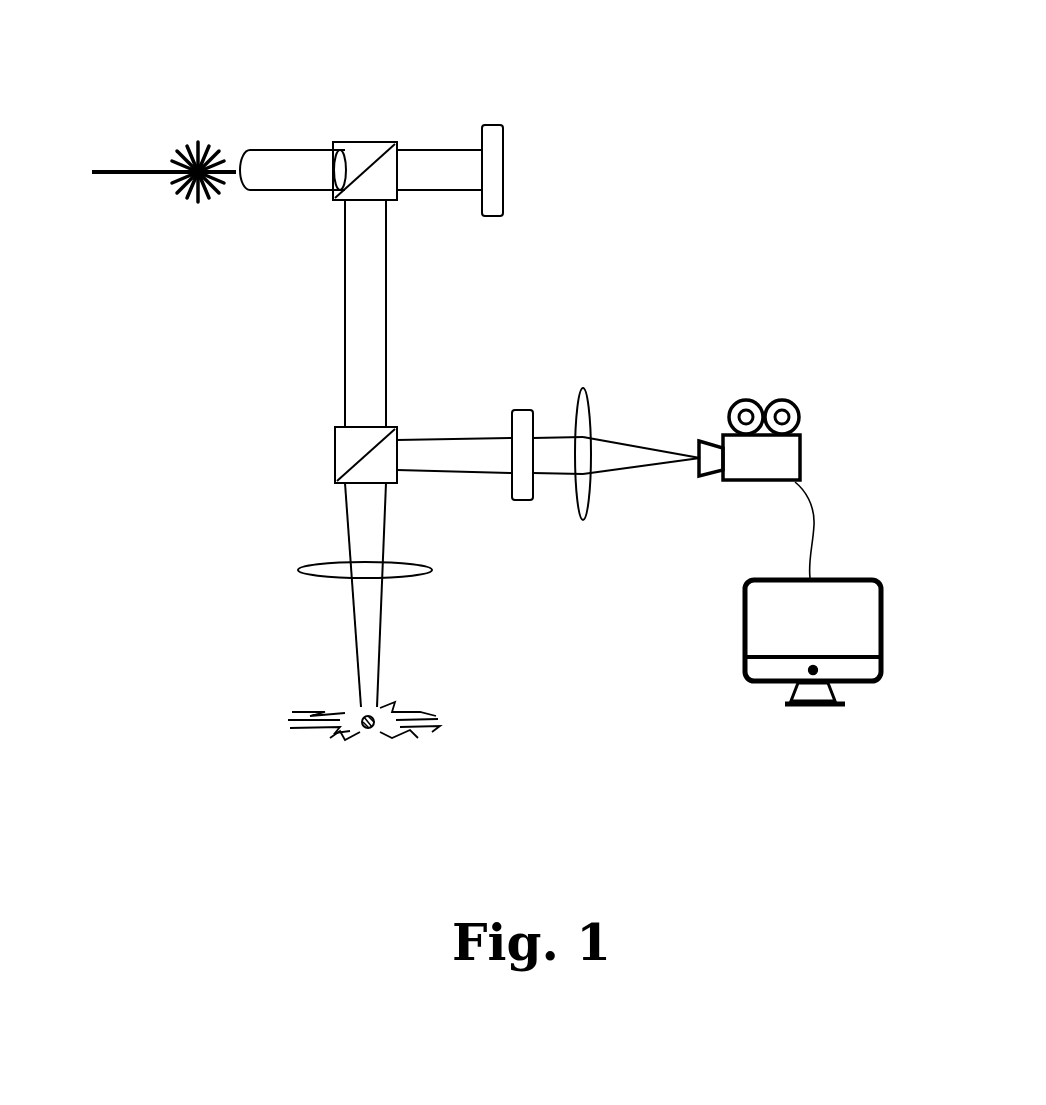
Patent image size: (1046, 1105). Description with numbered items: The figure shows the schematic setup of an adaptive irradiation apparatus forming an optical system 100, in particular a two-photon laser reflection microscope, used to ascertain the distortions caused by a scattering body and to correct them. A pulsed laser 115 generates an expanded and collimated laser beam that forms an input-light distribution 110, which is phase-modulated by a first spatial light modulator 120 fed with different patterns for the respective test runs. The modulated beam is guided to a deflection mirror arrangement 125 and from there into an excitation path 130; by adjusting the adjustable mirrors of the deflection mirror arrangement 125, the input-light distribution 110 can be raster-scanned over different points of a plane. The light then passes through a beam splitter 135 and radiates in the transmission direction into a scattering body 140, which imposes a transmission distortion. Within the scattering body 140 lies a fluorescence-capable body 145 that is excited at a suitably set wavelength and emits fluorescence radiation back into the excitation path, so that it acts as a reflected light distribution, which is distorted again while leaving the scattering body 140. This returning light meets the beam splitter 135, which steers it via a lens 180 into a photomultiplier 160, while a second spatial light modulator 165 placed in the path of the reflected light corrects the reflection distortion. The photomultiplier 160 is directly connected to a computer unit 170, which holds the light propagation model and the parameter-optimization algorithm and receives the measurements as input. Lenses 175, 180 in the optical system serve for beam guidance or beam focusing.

The optical system 100 is at (694, 225).
The input-light distribution 110 is at (278, 163).
The pulsed laser 115 is at (124, 185).
The spatial light modulator 120 is at (493, 140).
The deflection mirror arrangement 125 is at (375, 140).
The excitation path 130 is at (375, 250).
The beam splitter 135 is at (345, 447).
The scattering body 140 is at (350, 732).
The fluorescence-capable body 145 is at (362, 716).
The photomultiplier 160 is at (790, 460).
The second spatial light modulator 165 is at (525, 430).
The computer unit 170 is at (823, 605).
The lens 175 is at (435, 568).
The lens 180 is at (590, 430).